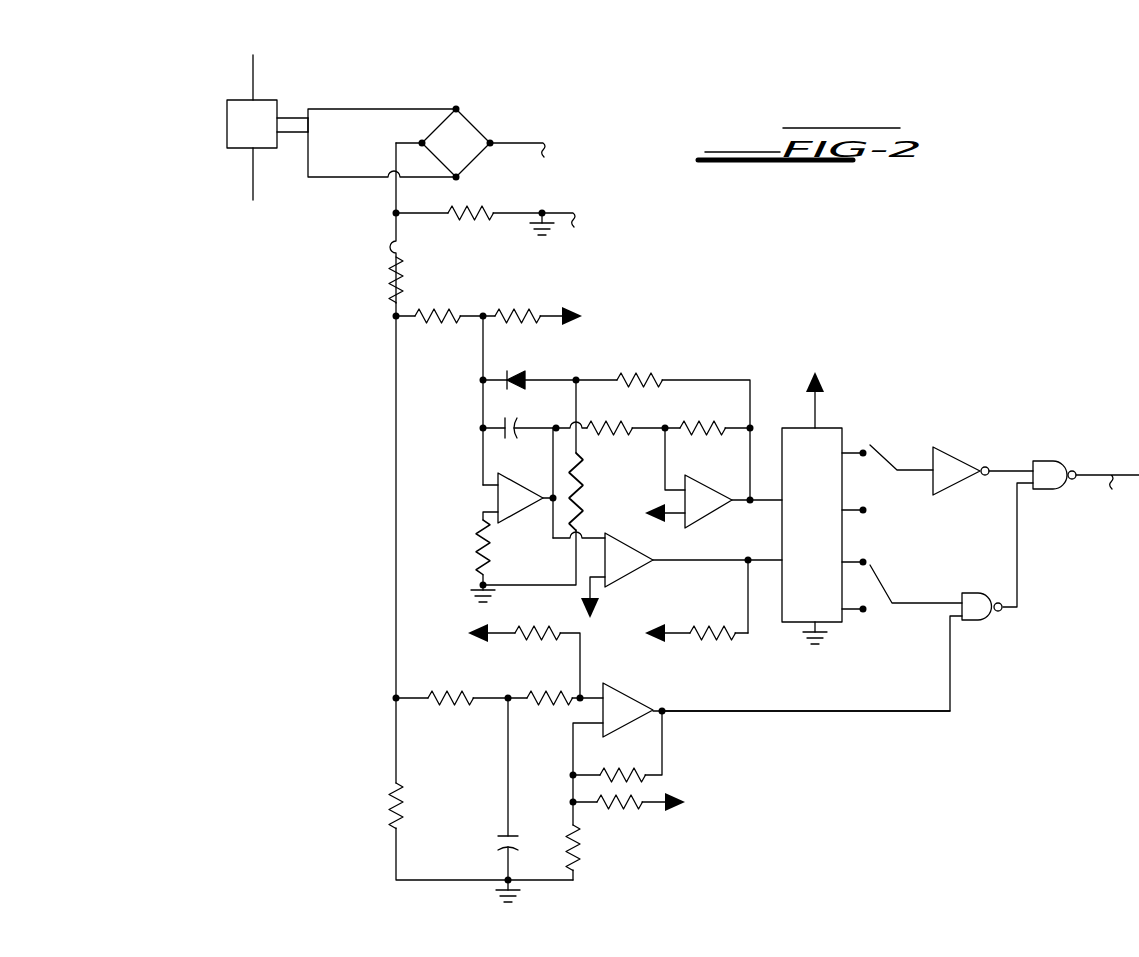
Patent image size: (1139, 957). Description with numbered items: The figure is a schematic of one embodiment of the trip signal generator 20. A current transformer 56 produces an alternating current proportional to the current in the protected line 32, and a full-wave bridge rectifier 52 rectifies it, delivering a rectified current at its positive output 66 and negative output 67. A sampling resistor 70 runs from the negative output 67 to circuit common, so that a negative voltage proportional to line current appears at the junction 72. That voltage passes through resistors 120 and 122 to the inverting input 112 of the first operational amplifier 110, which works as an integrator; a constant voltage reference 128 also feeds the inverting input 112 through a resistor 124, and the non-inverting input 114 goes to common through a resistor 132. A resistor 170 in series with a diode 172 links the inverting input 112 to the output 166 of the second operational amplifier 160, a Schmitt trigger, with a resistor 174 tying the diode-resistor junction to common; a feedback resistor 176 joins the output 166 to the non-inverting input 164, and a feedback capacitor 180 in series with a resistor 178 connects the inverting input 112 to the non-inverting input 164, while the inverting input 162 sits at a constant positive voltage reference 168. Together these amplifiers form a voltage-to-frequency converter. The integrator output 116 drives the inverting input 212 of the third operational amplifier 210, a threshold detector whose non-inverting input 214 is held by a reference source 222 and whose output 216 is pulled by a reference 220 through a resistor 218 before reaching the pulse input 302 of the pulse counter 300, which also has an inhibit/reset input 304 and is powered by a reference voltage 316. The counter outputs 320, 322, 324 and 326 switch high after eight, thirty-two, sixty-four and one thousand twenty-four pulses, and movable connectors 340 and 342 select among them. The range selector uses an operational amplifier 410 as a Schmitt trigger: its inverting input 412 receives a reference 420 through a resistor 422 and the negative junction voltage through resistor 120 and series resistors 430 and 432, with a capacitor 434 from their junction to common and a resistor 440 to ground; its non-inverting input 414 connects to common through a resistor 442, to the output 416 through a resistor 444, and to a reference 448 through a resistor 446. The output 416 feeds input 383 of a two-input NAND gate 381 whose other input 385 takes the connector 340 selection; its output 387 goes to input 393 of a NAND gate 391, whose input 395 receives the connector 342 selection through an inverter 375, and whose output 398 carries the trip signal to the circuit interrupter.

The trip signal generator 20 is at (430, 902).
The line 32 is at (253, 75).
The current transformer 56 is at (230, 123).
The full-wave bridge rectifier 52 is at (470, 124).
The negative output 67 is at (418, 139).
The positive output 66 is at (505, 143).
The load or sampling resistor 70 is at (469, 212).
The junction 72 is at (395, 215).
The resistor 120 is at (399, 283).
The resistor 122 is at (438, 309).
The resistor 124 is at (508, 309).
The constant voltage reference 128 is at (583, 314).
The diode 172 is at (522, 375).
The resistor 170 is at (652, 375).
The feedback capacitor 180 is at (516, 426).
The resistor 178 is at (620, 425).
The feedback resistor 176 is at (698, 425).
The resistor 174 is at (585, 472).
The first operational amplifier 110 is at (517, 520).
The inverting input 112 is at (490, 485).
The non-inverting input 114 is at (490, 512).
The output 116 is at (549, 496).
The resistor 132 is at (482, 558).
The inverting input 212 is at (592, 537).
The third operational amplifier 210 is at (623, 584).
The non-inverting input 214 is at (582, 593).
The constant positive voltage reference source 222 is at (598, 604).
The output 216 is at (718, 560).
The pulse input 302 is at (760, 550).
The inhibit/reset input 304 is at (776, 568).
The resistor 218 is at (718, 638).
The constant positive voltage reference 220 is at (656, 640).
The second operational amplifier 160 is at (712, 517).
The non-inverting input 164 is at (665, 462).
The constant positive voltage reference 168 is at (658, 505).
The inverting input 162 is at (675, 514).
The output 166 is at (732, 492).
The pulse counter 300 is at (812, 536).
The constant reference voltage 316 is at (814, 375).
The output 326 is at (850, 450).
The output 324 is at (866, 512).
The output 322 is at (868, 570).
The output 320 is at (847, 614).
The movable connector 342 is at (890, 454).
The inverter 375 is at (958, 461).
The input 395 is at (1028, 470).
The two-input NAND gate 391 is at (1051, 470).
The output 398 is at (1088, 474).
The input 393 is at (1022, 494).
The movable connector 340 is at (889, 598).
The input 385 is at (940, 602).
The two-input NAND gate 381 is at (977, 608).
The output 387 is at (1023, 612).
The input 383 is at (955, 620).
The resistor 432 is at (442, 705).
The resistor 430 is at (536, 705).
The inverting input 412 is at (592, 692).
The resistor 422 is at (534, 638).
The constant positive voltage reference 420 is at (474, 634).
The operational amplifier 410 is at (630, 702).
The non-inverting input 414 is at (577, 712).
The output 416 is at (664, 708).
The resistor 444 is at (616, 772).
The resistor 446 is at (638, 806).
The constant reference voltage 448 is at (688, 802).
The resistor 442 is at (583, 850).
The capacitor 434 is at (501, 835).
The resistor 440 is at (395, 827).